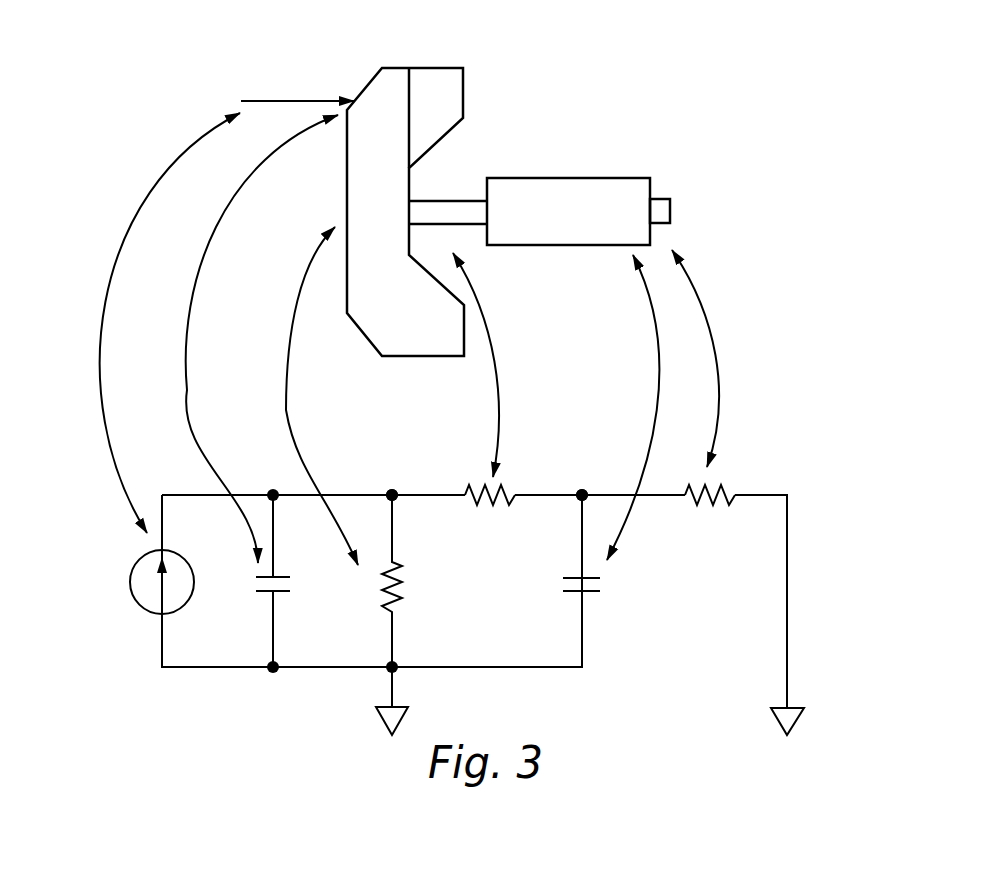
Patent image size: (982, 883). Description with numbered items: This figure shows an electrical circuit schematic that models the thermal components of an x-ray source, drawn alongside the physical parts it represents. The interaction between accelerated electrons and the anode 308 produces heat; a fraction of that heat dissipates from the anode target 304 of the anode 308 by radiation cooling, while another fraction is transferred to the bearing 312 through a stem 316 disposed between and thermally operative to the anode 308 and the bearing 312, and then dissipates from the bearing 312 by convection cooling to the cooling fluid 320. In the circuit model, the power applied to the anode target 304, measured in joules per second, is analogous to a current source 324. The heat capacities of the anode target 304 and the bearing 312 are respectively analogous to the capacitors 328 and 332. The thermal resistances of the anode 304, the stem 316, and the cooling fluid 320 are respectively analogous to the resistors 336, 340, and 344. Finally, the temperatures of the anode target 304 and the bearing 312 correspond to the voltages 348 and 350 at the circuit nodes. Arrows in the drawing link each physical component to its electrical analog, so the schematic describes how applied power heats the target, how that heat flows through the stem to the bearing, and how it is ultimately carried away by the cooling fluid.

The anode target 304 is at (348, 70).
The anode 308 is at (395, 68).
The bearing 312 is at (592, 178).
The stem 316 is at (453, 200).
The cooling fluid 320 is at (690, 197).
The current source 324 is at (108, 563).
The capacitor 328 is at (297, 585).
The capacitor 332 is at (605, 580).
The resistor 336 is at (407, 582).
The resistor 340 is at (485, 515).
The resistor 344 is at (737, 468).
The voltage 348 is at (397, 470).
The voltage 350 is at (578, 473).